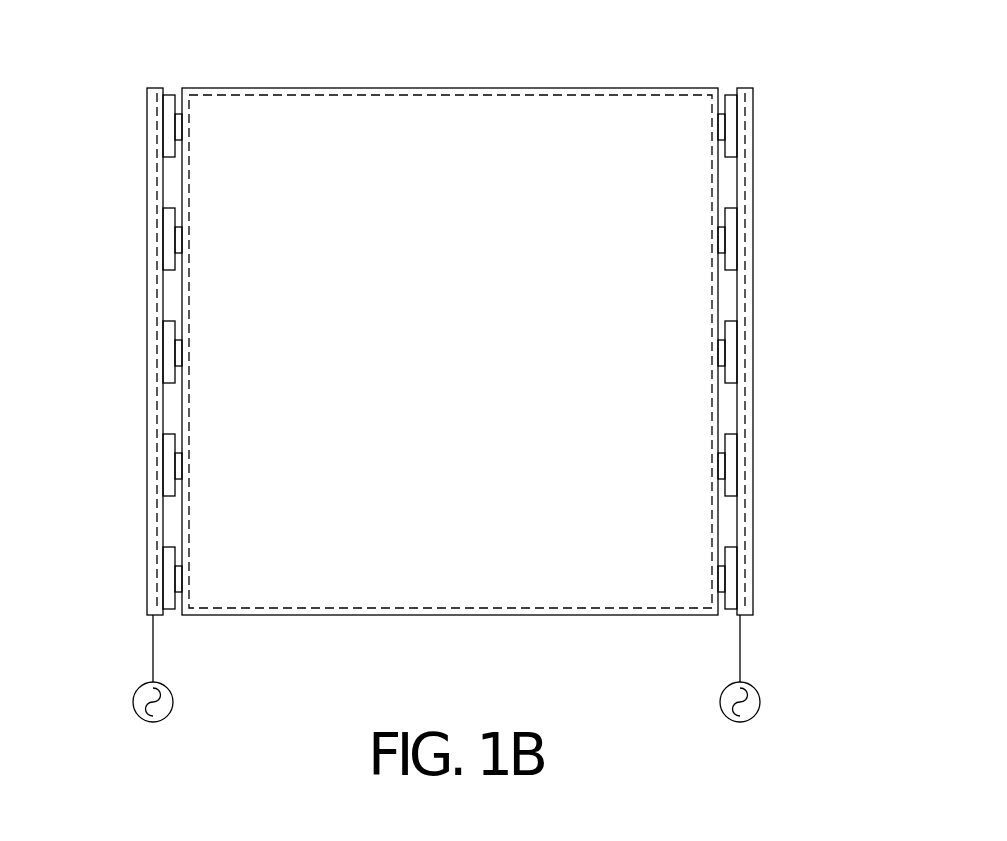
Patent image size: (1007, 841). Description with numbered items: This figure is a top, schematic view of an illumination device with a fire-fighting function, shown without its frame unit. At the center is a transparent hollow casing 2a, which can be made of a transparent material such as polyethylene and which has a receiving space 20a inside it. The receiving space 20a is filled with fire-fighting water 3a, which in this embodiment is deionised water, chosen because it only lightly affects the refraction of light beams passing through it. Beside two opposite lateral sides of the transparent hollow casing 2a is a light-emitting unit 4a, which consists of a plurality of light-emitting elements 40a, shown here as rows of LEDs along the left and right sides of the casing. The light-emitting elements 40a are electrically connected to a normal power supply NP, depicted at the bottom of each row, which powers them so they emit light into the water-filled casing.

The transparent hollow casing 2a is at (665, 90).
The receiving space 20a is at (575, 92).
The fire-fighting water 3a is at (432, 122).
The light-emitting unit 4a is at (738, 288).
The light-emitting elements 40a is at (178, 116).
The normal power supply NP is at (132, 708).